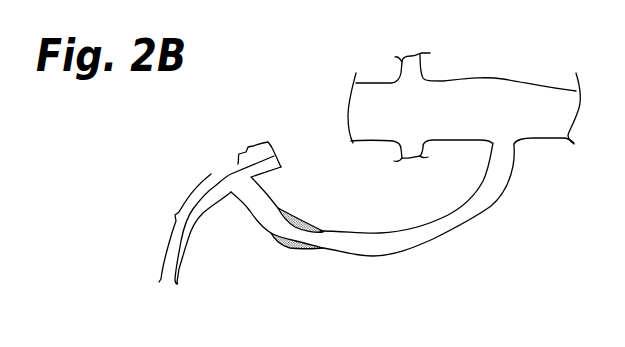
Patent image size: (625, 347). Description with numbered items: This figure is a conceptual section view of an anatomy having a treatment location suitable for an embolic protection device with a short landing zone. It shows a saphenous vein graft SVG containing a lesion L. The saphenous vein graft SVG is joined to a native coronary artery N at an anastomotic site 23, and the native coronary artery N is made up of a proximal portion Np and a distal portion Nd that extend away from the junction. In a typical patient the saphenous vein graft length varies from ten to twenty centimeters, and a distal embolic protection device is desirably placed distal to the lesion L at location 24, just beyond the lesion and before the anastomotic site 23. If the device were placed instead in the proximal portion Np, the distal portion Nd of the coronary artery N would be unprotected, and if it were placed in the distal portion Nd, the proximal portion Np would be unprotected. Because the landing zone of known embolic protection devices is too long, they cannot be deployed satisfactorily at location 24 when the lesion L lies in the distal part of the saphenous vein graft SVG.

The native coronary artery N is at (227, 169).
The proximal portion of native coronary artery Np is at (236, 165).
The distal portion of native coronary artery Nd is at (176, 211).
The anastomotic site 23 is at (253, 178).
The location 24 is at (244, 210).
The lesion L is at (288, 249).
The saphenous vein graft SVG is at (427, 245).